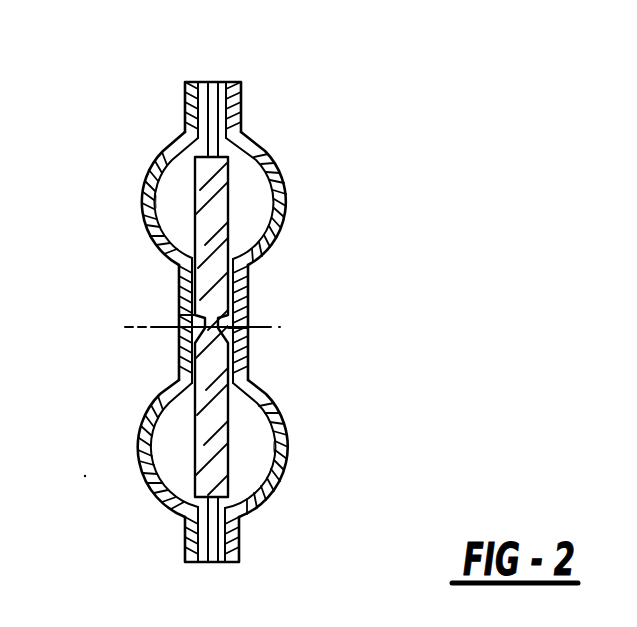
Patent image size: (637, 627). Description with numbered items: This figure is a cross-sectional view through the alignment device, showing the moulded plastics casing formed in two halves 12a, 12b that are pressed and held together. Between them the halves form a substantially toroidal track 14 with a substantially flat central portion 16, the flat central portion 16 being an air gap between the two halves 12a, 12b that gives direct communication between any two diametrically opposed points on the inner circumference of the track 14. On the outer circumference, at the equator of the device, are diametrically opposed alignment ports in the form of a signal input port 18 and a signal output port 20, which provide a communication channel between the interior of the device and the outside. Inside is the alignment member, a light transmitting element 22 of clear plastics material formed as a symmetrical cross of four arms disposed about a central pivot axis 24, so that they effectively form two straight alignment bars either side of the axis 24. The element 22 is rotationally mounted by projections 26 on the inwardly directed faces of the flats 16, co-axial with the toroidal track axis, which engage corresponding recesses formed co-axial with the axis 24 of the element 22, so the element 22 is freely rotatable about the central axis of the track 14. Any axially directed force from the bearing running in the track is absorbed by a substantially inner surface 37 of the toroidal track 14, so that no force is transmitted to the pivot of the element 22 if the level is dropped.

The casing half 12a is at (268, 162).
The casing half 12b is at (163, 160).
The toroidal track 14 is at (175, 200).
The flat central portion 16 is at (248, 292).
The signal input port 18 is at (212, 561).
The signal output port 20 is at (221, 82).
The light transmitting element 22 is at (230, 203).
The central pivot axis 24 is at (279, 326).
The projections 26 is at (190, 315).
The inner surface of toroidal track 37 is at (146, 428).